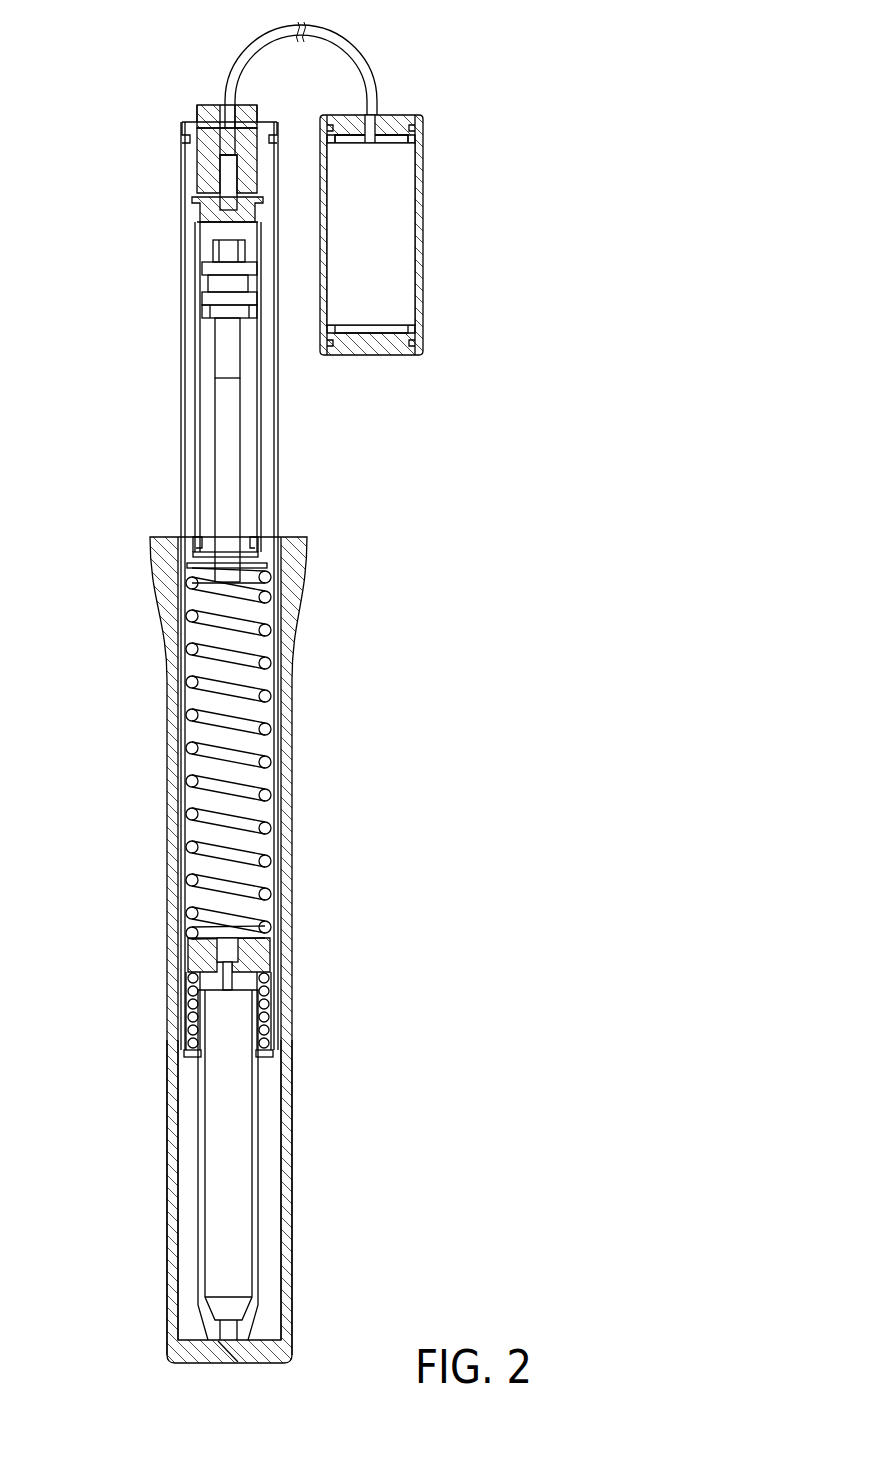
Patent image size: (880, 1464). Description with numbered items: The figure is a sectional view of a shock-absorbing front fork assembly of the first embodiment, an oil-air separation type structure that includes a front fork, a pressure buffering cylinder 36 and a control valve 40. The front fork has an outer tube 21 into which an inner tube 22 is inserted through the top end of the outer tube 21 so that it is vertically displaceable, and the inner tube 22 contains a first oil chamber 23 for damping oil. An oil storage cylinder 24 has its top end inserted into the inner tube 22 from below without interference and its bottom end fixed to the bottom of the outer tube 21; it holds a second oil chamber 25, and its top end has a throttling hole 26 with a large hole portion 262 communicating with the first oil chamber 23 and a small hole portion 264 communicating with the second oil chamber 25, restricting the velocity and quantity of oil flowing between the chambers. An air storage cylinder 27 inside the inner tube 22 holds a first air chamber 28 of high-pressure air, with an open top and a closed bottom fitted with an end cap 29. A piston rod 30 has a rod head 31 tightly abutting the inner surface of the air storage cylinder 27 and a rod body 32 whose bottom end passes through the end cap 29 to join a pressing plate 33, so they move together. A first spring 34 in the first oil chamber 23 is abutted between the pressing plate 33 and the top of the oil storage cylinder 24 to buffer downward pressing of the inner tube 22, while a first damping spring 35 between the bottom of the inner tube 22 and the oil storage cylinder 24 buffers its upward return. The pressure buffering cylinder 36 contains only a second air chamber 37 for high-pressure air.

The outer tube 21 is at (175, 1120).
The inner tube 22 is at (183, 378).
The first oil chamber 23 is at (205, 698).
The oil storage cylinder 24 is at (252, 1113).
The second oil chamber 25 is at (232, 1188).
The throttling hole 26 is at (380, 893).
The large hole portion 262 is at (232, 950).
The small hole portion 264 is at (232, 977).
The air storage cylinder 27 is at (203, 412).
The first air chamber 28 is at (210, 473).
The end cap 29 is at (205, 538).
The piston rod 30 is at (117, 215).
The rod head 31 is at (203, 265).
The rod body 32 is at (225, 318).
The pressing plate 33 is at (263, 563).
The first spring 34 is at (243, 724).
The first damping spring 35 is at (262, 1023).
The pressure buffering cylinder 36 is at (438, 115).
The second air chamber 37 is at (395, 243).
The control valve 40 is at (166, 98).